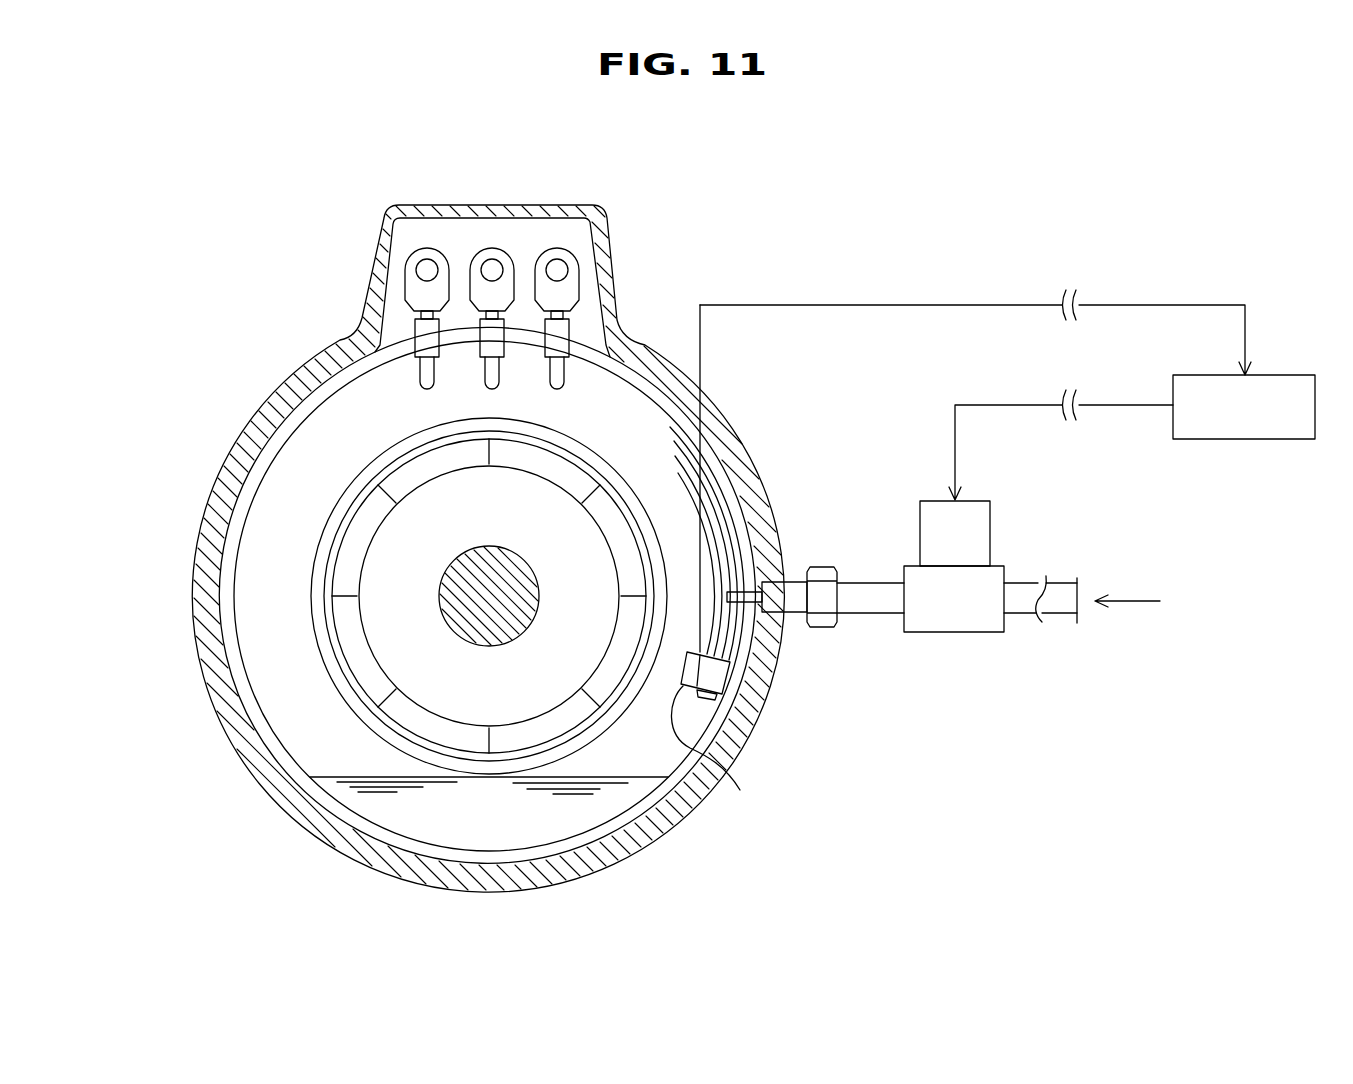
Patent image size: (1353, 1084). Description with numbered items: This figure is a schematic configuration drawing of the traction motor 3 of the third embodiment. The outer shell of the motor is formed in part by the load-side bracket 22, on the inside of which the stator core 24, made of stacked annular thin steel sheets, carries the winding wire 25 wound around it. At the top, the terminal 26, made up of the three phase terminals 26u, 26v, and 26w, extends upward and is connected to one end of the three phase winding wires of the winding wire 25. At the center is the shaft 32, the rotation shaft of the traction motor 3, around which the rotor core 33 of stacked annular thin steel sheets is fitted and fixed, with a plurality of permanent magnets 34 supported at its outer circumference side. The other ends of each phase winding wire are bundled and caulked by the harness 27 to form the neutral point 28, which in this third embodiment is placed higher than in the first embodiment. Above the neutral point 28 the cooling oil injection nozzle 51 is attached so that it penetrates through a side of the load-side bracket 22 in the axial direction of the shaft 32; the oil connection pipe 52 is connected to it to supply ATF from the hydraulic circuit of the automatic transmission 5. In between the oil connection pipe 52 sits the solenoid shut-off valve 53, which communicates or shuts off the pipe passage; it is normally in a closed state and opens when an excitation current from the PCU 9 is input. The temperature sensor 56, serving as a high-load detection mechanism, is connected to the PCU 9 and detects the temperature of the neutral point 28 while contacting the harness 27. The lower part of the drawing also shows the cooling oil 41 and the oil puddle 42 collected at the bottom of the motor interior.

The traction motor 3 is at (150, 245).
The terminal 26 is at (608, 150).
The terminal 26u is at (426, 262).
The terminal 26v is at (491, 262).
The terminal 26w is at (560, 262).
The winding wire 25 is at (358, 387).
The stator core 24 is at (310, 402).
The shaft 32 is at (443, 567).
The permanent magnets 34 is at (347, 567).
The rotor core 33 is at (402, 628).
The load-side bracket 22 is at (250, 745).
The Oil Puddle 42 is at (402, 817).
The Cooling Oil 41 is at (540, 823).
The cooling oil injection nozzle 51 is at (748, 592).
The oil connection pipe 52 is at (1038, 598).
The automatic transmission 5 is at (1187, 607).
The solenoid shut-off valve 53 is at (958, 615).
The neutral point 28 is at (723, 672).
The harness 27 is at (742, 700).
The temperature sensor 56 is at (728, 768).
The PCU 9 is at (1240, 440).